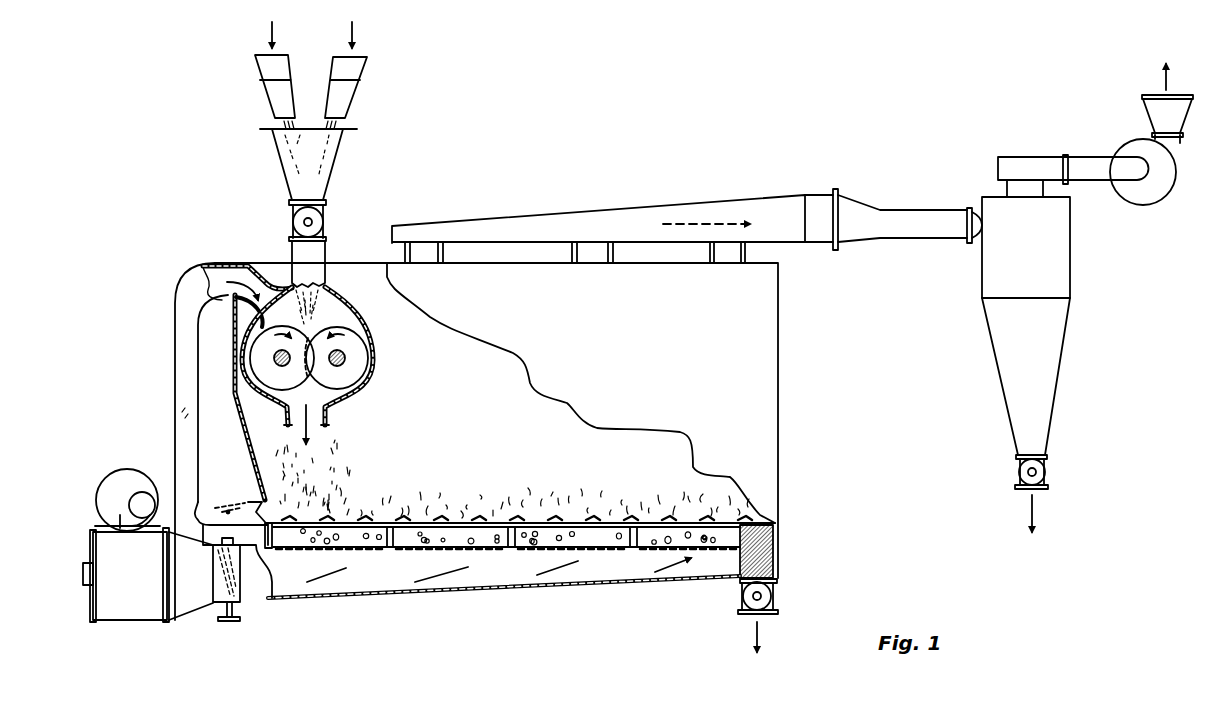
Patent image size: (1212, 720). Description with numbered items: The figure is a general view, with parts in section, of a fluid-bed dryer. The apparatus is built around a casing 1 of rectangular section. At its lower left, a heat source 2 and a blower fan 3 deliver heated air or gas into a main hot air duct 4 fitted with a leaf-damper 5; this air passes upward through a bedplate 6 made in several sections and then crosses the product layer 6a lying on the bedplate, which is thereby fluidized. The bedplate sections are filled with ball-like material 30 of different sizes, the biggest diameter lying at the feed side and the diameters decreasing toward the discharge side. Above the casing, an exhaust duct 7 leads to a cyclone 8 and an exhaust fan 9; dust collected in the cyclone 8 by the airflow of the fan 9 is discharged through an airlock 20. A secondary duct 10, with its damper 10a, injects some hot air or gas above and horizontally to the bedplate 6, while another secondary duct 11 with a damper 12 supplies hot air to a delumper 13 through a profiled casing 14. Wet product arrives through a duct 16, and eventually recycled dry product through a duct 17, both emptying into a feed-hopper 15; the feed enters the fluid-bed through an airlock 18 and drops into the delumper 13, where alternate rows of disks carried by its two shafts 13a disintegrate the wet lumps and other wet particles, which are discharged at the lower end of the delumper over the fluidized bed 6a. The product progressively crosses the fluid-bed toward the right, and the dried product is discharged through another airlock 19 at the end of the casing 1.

The casing 1 is at (763, 385).
The heat source 2 is at (135, 605).
The blower fan 3 is at (120, 483).
The main hot air duct 4 is at (393, 583).
The leaf-damper 5 is at (243, 582).
The bedplate 6 is at (437, 513).
The product layer 6a is at (563, 510).
The exhaust duct 7 is at (628, 217).
The cyclone 8 is at (995, 272).
The exhaust fan 9 is at (1137, 193).
The secondary duct 10 is at (248, 497).
The damper 10a is at (228, 512).
The secondary duct 11 is at (177, 362).
The damper 12 is at (183, 417).
The delumper 13 is at (355, 347).
The shafts 13a is at (345, 360).
The profiled casing 14 is at (357, 390).
The feed-hopper 15 is at (322, 175).
The duct 16 is at (352, 92).
The duct 17 is at (266, 90).
The airlock 18 is at (300, 222).
The airlock 19 is at (740, 598).
The airlock 20 is at (1020, 472).
The ball-like material 30 is at (330, 540).